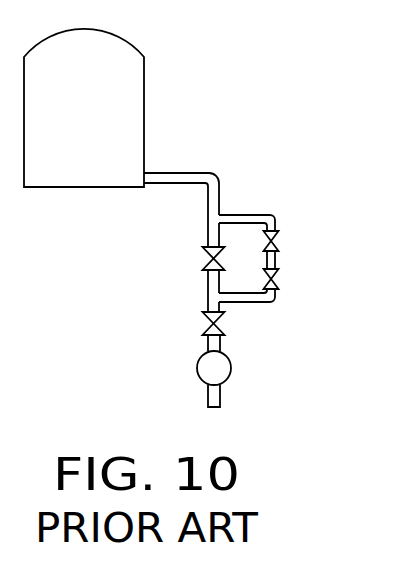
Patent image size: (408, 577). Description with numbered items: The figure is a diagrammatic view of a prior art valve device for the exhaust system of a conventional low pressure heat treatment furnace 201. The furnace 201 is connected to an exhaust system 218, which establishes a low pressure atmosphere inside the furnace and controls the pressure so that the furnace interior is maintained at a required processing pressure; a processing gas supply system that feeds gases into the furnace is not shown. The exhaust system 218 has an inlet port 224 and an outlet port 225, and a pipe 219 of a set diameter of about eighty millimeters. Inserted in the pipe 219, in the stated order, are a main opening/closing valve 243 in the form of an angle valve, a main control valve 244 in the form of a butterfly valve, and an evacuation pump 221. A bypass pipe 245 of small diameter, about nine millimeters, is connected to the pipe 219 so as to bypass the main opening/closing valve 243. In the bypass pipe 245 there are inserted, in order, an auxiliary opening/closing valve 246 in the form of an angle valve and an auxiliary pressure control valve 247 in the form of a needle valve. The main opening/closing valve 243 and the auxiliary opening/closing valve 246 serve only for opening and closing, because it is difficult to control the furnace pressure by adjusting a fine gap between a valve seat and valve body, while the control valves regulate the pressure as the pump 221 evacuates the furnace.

The low pressure heat treatment furnace 201 is at (148, 62).
The inlet port 224 is at (222, 188).
The outlet port 225 is at (208, 282).
The main opening/closing valve 243 is at (202, 250).
The main control valve 244 is at (203, 325).
The bypass pipe 245 is at (238, 213).
The auxiliary opening/closing valve 246 is at (280, 240).
The auxiliary pressure control valve 247 is at (280, 278).
The evacuation pump 221 is at (230, 357).
The pipe 219 is at (221, 395).
The exhaust system 218 is at (197, 293).